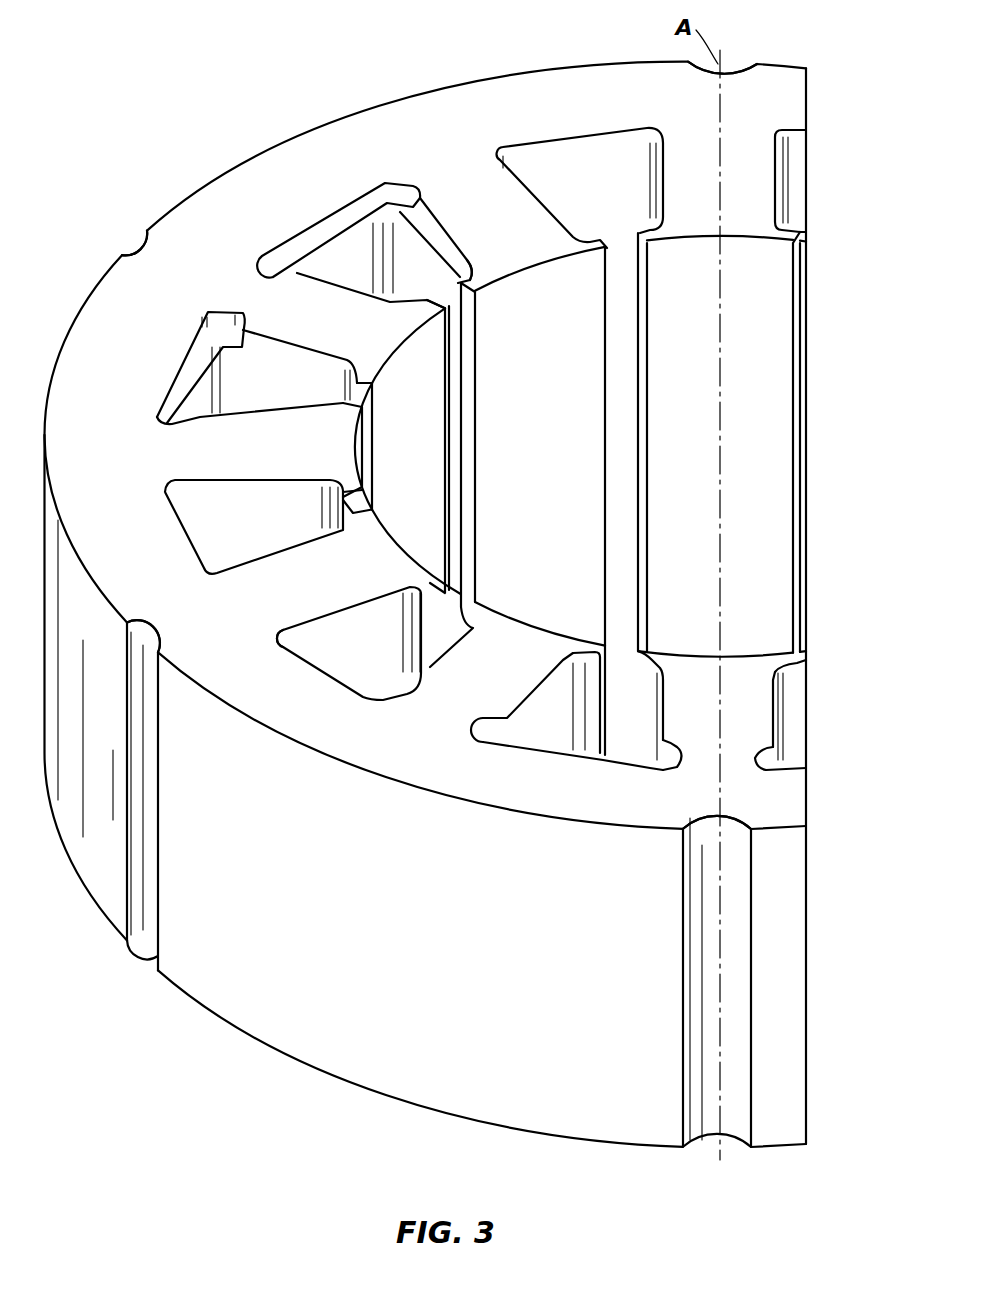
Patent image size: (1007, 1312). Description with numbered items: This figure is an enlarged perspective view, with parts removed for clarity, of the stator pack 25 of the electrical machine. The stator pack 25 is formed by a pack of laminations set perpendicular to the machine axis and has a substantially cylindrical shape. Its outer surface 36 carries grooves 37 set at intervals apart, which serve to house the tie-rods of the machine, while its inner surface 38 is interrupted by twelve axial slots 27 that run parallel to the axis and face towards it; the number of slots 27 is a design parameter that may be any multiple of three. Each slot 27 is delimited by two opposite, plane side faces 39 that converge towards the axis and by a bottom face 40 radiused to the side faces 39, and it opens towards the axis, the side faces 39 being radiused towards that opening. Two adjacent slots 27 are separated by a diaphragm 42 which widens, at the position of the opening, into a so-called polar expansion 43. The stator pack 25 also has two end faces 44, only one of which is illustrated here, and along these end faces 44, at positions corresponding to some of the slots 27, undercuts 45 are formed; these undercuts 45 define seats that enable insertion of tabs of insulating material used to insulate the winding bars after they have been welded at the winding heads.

The stator pack 25 is at (256, 998).
The axial slots 27 is at (412, 238).
The outer surface 36 is at (196, 933).
The grooves 37 is at (138, 258).
The inner surface 38 is at (752, 480).
The side faces 39 is at (443, 277).
The bottom face 40 is at (360, 251).
The diaphragm 42 is at (360, 347).
The polar expansion 43 is at (420, 318).
The end faces 44 is at (301, 184).
The undercuts 45 is at (287, 250).